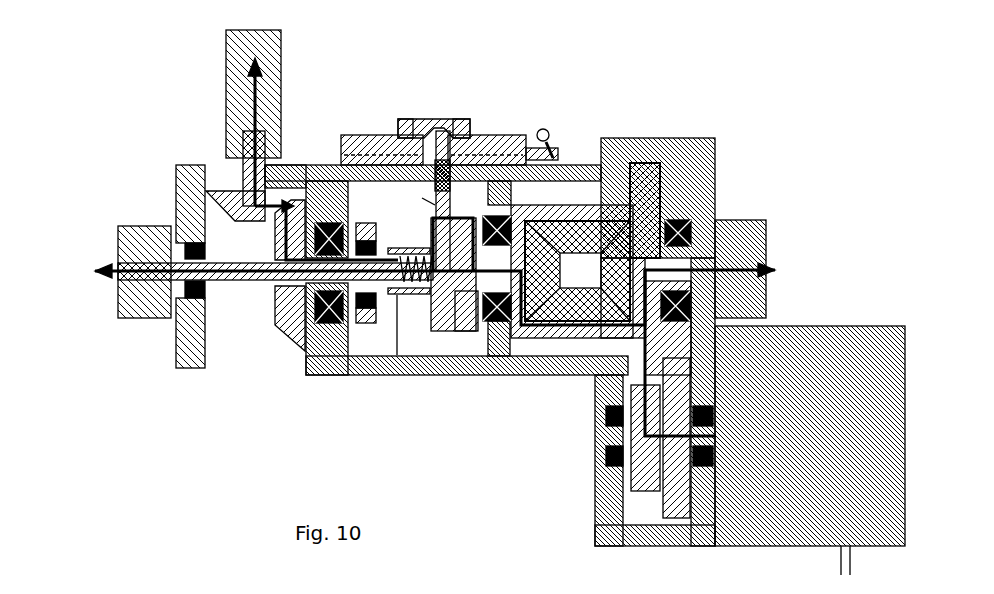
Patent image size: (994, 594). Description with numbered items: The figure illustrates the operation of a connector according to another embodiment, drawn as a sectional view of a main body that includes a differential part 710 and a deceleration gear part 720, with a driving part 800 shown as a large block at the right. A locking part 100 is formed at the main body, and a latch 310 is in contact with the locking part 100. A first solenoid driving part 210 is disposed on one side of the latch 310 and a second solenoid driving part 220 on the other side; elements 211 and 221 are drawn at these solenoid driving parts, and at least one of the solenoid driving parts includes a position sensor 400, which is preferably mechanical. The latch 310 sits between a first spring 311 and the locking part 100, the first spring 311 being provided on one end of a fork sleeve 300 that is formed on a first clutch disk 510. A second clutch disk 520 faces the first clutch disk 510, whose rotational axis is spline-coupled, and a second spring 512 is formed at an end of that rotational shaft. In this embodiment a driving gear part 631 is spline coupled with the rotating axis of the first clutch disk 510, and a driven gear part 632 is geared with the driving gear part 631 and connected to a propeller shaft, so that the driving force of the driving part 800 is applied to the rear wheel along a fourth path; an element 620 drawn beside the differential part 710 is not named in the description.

The locking part 100 is at (420, 100).
The first solenoid driving part 210 is at (372, 130).
The flange recess 211 is at (397, 117).
The second solenoid driving part 220 is at (500, 128).
The flange protrusion 221 is at (457, 130).
The fork sleeve 300 is at (338, 183).
The latch 310 is at (437, 122).
The first spring 311 is at (415, 195).
The position sensor 400 is at (540, 132).
The first clutch disk 510 is at (416, 323).
The second spring 512 is at (390, 300).
The second clutch disk 520 is at (460, 323).
The motor housing 620 is at (746, 205).
The driving gear part 631 is at (258, 320).
The driven gear part 632 is at (220, 183).
The differential part 710 is at (604, 190).
The deceleration gear part 720 is at (628, 470).
The driving part 800 is at (835, 318).